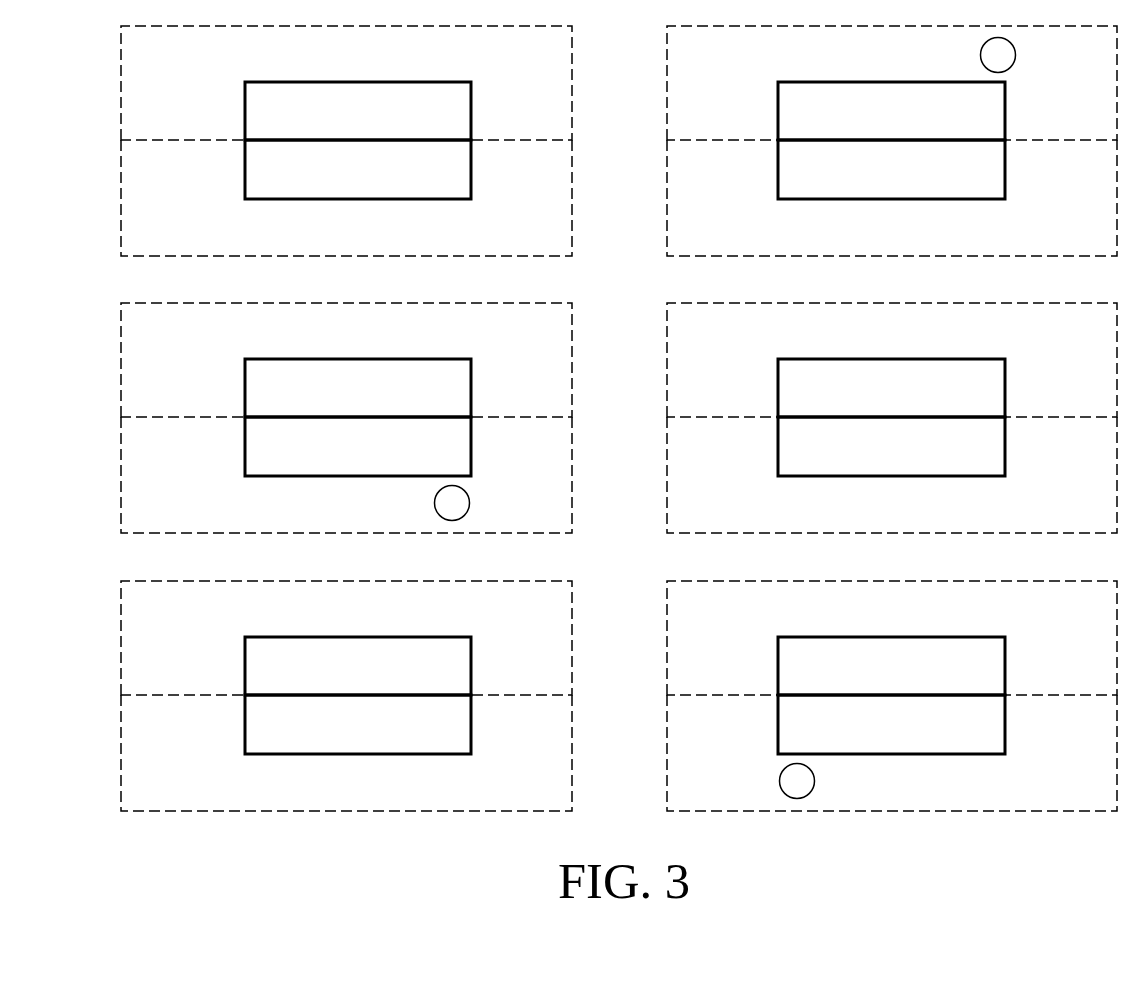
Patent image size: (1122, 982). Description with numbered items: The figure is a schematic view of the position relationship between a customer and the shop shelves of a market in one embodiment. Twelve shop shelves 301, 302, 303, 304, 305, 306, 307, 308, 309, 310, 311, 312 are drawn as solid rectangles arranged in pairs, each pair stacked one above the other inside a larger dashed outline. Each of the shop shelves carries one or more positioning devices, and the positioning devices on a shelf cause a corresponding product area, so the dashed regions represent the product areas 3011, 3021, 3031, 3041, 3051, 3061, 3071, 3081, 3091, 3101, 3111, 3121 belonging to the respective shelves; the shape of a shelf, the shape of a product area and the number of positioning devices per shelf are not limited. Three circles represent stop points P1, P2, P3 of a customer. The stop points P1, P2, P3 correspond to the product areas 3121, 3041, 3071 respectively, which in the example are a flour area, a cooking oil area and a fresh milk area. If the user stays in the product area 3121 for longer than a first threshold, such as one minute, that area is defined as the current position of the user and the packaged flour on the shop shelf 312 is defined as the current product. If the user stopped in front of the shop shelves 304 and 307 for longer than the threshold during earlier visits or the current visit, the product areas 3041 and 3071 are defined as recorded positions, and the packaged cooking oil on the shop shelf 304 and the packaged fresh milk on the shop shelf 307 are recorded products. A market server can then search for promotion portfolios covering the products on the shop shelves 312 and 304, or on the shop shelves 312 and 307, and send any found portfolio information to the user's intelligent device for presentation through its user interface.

The shop shelf 301 is at (336, 128).
The shop shelf 302 is at (336, 186).
The product area 3011 is at (154, 128).
The product area 3021 is at (154, 186).
The shop shelf 303 is at (336, 405).
The shop shelf 304 is at (336, 463).
The product area 3031 is at (154, 405).
The product area 3041 is at (154, 463).
The shop shelf 305 is at (336, 683).
The shop shelf 306 is at (336, 741).
The product area 3051 is at (154, 683).
The product area 3061 is at (154, 741).
The shop shelf 307 is at (869, 128).
The shop shelf 308 is at (869, 186).
The product area 3071 is at (701, 128).
The product area 3081 is at (701, 186).
The shop shelf 309 is at (869, 405).
The shop shelf 310 is at (869, 463).
The product area 3091 is at (701, 405).
The product area 3101 is at (701, 463).
The shop shelf 311 is at (869, 683).
The shop shelf 312 is at (869, 741).
The product area 3111 is at (701, 683).
The product area 3121 is at (701, 741).
The stop point P1 is at (779, 782).
The stop point P2 is at (470, 503).
The stop point P3 is at (1015, 55).